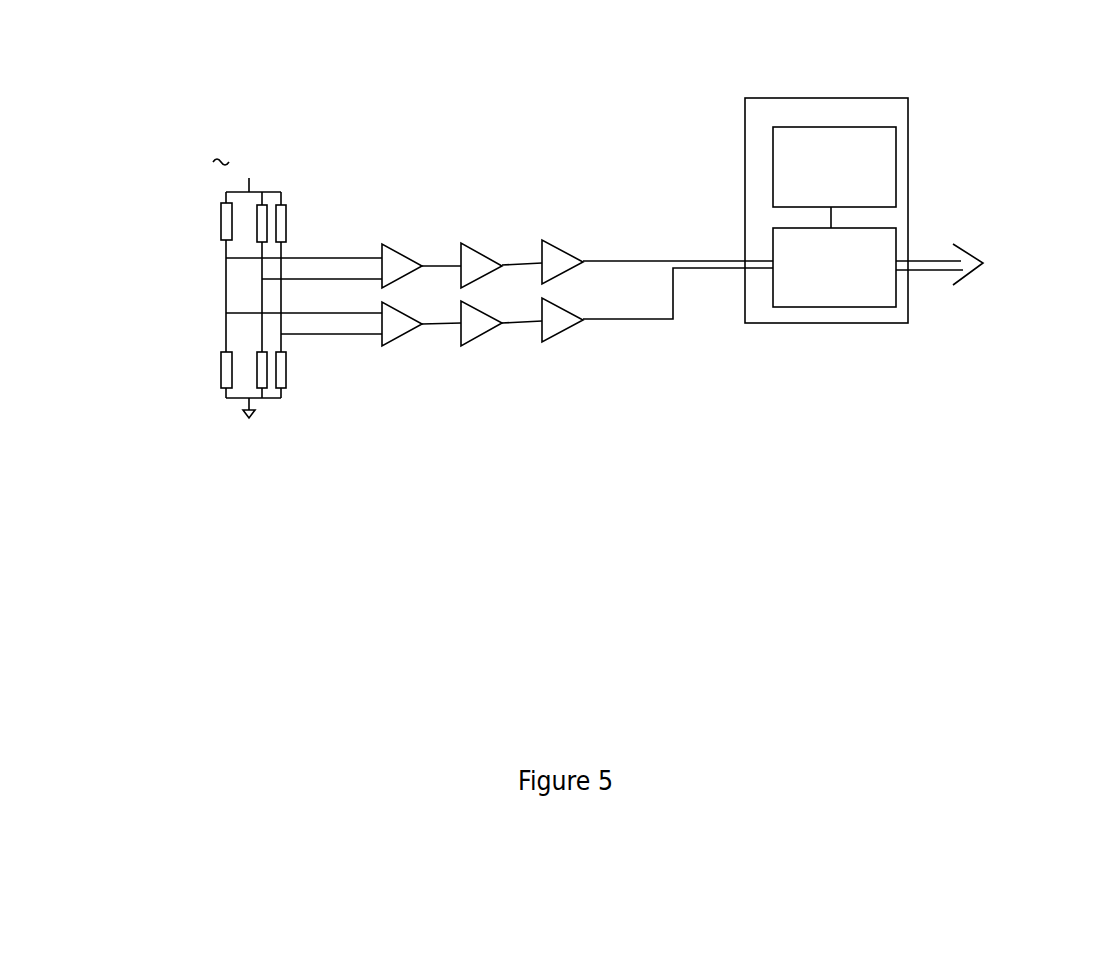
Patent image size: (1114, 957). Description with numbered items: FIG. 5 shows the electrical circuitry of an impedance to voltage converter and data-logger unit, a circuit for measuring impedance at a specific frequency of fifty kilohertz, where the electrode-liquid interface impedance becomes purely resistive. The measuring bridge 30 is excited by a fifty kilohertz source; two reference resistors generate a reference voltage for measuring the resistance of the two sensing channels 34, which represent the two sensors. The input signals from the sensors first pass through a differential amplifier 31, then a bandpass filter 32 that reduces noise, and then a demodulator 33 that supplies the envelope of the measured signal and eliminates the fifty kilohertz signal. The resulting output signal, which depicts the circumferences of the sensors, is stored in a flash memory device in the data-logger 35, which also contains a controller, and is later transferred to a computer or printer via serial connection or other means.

The bridge circuit / excitation source 30 is at (223, 138).
The differential amplifier 31 is at (408, 193).
The bandpass filters 32 is at (487, 193).
The demodulator 33 is at (577, 193).
The channels Rs1 and Rs2 34 is at (295, 377).
The data-logger 35 is at (822, 325).